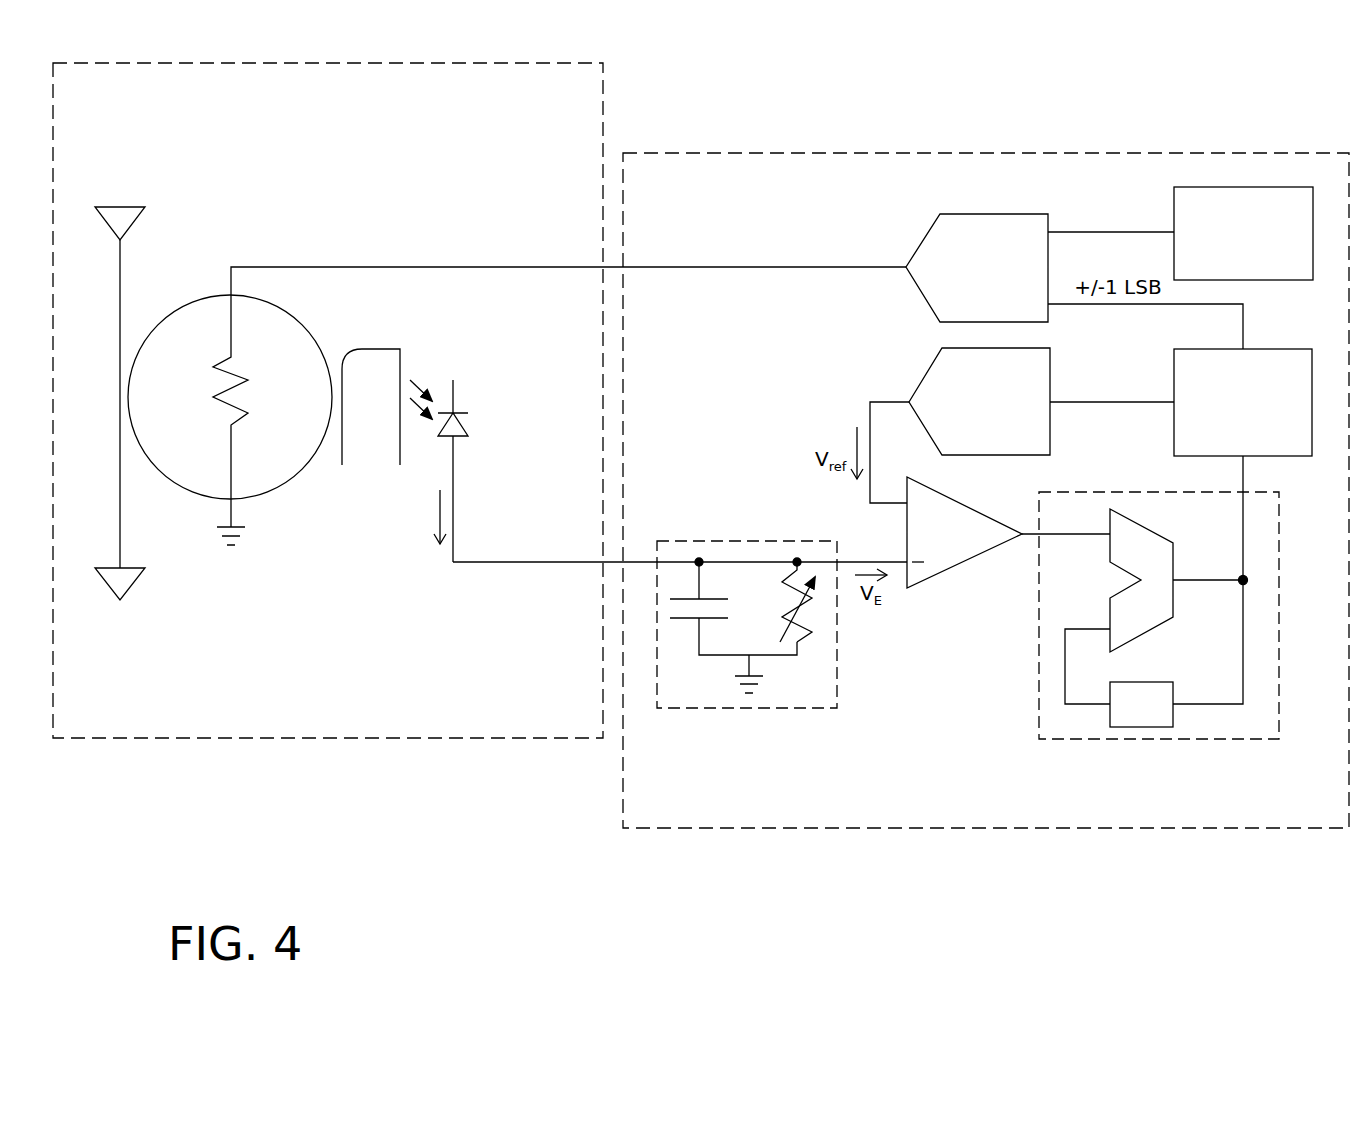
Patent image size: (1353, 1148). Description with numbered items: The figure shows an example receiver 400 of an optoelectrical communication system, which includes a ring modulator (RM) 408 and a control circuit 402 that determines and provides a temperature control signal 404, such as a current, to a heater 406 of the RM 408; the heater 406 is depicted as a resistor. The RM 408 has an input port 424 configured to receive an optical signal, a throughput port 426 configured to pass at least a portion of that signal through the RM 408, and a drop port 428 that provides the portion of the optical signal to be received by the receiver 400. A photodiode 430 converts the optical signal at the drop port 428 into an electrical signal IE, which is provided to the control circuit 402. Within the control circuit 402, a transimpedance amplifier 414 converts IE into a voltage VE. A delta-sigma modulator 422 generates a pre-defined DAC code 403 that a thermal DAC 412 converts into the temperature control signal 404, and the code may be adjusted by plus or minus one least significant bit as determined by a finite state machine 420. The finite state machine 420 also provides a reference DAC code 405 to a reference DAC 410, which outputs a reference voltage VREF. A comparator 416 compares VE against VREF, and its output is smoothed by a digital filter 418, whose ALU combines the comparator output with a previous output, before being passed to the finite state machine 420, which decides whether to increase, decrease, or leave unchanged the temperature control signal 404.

The receiver 400 is at (1255, 88).
The control circuit 402 is at (982, 153).
The DAC code 403 is at (1065, 232).
The temperature control signal 404 is at (670, 267).
The reference DAC code 405 is at (1065, 402).
The heater 406 is at (194, 394).
The ring modulator 408 is at (318, 740).
The reference DAC 410 is at (1039, 424).
The thermal DAC 412 is at (1033, 291).
The transimpedance amplifier 414 is at (675, 708).
The comparator 416 is at (931, 548).
The digital filter 418 is at (1163, 740).
The finite state machine 420 is at (1224, 442).
The delta-sigma modulator 422 is at (1224, 271).
The input port 424 is at (120, 220).
The throughput port 426 is at (120, 600).
The drop port 428 is at (365, 349).
The photodiode 430 is at (490, 426).